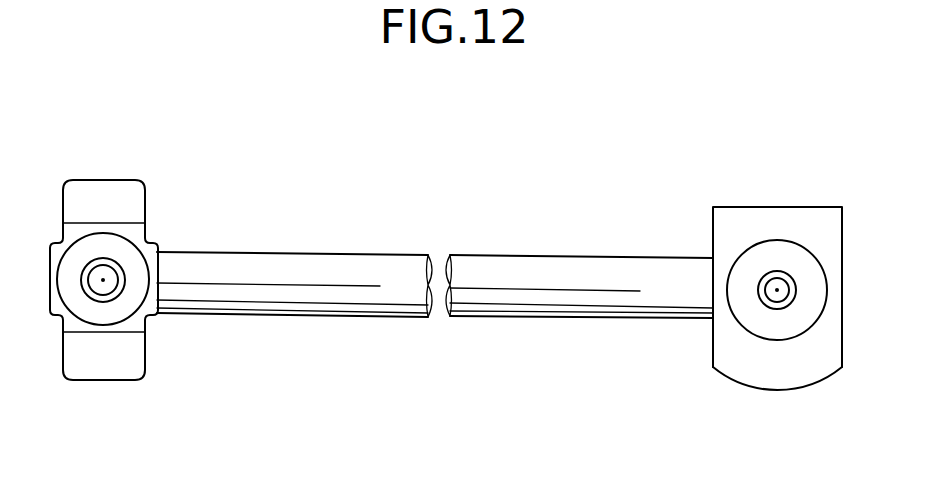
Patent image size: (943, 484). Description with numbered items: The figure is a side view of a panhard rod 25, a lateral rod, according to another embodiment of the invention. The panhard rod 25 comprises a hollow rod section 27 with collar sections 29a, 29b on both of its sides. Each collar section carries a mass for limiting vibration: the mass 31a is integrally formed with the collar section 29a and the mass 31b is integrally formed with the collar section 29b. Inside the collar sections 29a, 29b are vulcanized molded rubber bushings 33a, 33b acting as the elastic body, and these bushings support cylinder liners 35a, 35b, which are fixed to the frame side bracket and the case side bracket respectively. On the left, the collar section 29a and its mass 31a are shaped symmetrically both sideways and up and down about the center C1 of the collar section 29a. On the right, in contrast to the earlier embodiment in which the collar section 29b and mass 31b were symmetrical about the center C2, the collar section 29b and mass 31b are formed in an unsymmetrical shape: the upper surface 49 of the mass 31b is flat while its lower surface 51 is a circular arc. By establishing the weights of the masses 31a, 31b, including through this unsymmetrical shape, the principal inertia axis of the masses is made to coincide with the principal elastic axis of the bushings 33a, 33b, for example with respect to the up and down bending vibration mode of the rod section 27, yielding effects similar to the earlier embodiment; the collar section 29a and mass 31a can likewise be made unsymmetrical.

The panhard rod 25 is at (458, 222).
The hollow rod section 27 is at (370, 253).
The collar section 29a is at (44, 240).
The collar section 29b is at (844, 236).
The mass 31a is at (125, 179).
The mass 31b is at (742, 206).
The bushing 33a is at (135, 259).
The bushing 33b is at (755, 252).
The cylinder liner 35a is at (104, 276).
The cylinder liner 35b is at (776, 288).
The upper surface 49 is at (785, 206).
The lower surface 51 is at (819, 391).
The center of collar section C1 is at (103, 283).
The center of collar section C2 is at (777, 292).